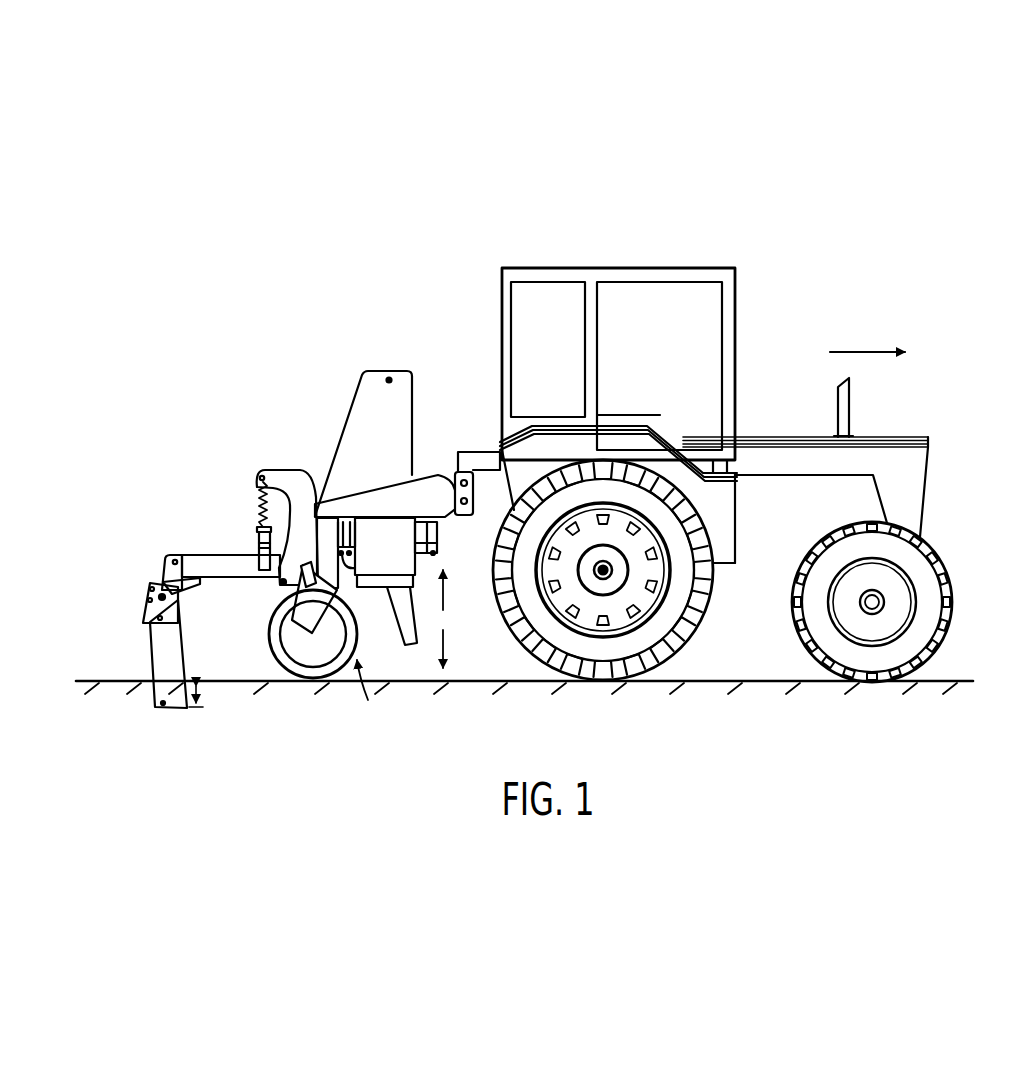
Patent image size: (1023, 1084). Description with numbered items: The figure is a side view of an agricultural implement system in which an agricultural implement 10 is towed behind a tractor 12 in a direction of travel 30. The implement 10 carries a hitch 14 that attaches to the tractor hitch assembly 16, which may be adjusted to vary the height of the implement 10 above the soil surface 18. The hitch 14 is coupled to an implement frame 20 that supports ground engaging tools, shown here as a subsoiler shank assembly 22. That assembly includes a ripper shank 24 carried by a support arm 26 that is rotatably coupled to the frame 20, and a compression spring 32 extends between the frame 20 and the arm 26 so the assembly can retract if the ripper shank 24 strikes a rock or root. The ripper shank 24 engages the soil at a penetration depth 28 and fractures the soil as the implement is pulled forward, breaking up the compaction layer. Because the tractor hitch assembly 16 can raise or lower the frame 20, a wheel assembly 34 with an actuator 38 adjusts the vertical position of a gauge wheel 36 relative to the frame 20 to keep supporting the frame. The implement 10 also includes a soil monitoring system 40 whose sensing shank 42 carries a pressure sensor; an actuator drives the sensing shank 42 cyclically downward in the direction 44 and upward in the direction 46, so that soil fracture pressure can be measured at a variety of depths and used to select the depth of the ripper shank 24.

The agricultural implement 10 is at (230, 365).
The tractor 12 is at (780, 280).
The hitch 14 is at (450, 487).
The tractor hitch assembly 16 is at (480, 450).
The soil surface 18 is at (943, 680).
The implement frame 20 is at (289, 480).
The subsoiler shank assembly 22 is at (140, 563).
The ripper shank 24 is at (160, 648).
The support arm 26 is at (206, 560).
The penetration depth 28 is at (200, 706).
The direction of travel 30 is at (880, 352).
The compression spring 32 is at (258, 508).
The wheel assembly 34 is at (368, 696).
The gauge wheel 36 is at (270, 657).
The actuator 38 is at (282, 593).
The soil monitoring system 40 is at (408, 653).
The sensing shank 42 is at (398, 628).
The downward direction 44 is at (450, 650).
The upward direction 46 is at (450, 590).